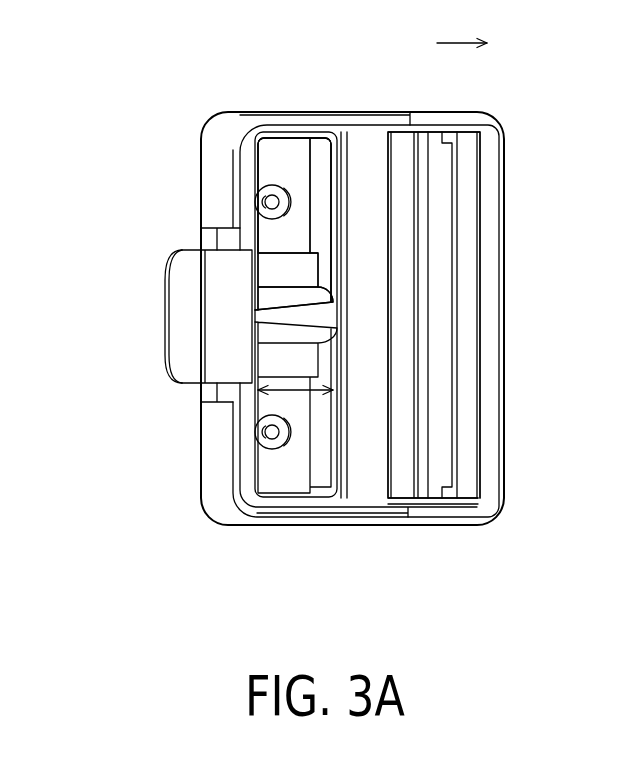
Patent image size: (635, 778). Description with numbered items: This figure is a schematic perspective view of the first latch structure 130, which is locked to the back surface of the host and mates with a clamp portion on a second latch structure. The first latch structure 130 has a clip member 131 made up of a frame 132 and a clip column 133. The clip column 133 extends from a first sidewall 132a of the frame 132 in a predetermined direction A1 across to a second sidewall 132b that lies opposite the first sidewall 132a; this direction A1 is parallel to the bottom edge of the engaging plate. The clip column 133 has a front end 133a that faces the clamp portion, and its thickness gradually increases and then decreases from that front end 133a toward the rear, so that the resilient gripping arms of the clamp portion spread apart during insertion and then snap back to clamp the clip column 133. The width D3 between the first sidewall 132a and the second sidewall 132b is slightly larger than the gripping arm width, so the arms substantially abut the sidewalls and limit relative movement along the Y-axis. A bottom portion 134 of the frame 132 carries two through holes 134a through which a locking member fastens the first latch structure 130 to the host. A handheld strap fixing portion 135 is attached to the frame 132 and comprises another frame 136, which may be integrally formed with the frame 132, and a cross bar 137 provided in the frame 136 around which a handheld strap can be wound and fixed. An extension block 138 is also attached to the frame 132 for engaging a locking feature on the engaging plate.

The first latch structure 130 is at (140, 78).
The clip member 131 is at (118, 155).
The frame 132 is at (250, 180).
The first sidewall 132a is at (258, 162).
The second sidewall 132b is at (323, 166).
The clip column 133 is at (290, 300).
The front end 133a is at (307, 315).
The bottom portion 134 is at (270, 475).
The through holes 134a is at (268, 432).
The handheld strap fixing portion 135 is at (525, 588).
The frame 136 is at (437, 510).
The cross bar 137 is at (478, 517).
The extension block 138 is at (192, 307).
The width D3 is at (297, 392).
The predetermined direction A1 is at (462, 25).